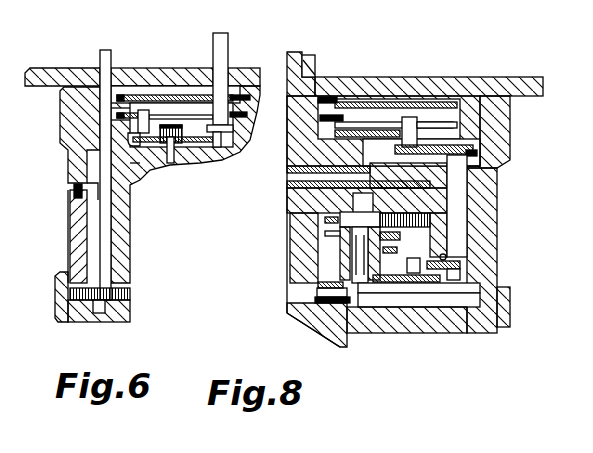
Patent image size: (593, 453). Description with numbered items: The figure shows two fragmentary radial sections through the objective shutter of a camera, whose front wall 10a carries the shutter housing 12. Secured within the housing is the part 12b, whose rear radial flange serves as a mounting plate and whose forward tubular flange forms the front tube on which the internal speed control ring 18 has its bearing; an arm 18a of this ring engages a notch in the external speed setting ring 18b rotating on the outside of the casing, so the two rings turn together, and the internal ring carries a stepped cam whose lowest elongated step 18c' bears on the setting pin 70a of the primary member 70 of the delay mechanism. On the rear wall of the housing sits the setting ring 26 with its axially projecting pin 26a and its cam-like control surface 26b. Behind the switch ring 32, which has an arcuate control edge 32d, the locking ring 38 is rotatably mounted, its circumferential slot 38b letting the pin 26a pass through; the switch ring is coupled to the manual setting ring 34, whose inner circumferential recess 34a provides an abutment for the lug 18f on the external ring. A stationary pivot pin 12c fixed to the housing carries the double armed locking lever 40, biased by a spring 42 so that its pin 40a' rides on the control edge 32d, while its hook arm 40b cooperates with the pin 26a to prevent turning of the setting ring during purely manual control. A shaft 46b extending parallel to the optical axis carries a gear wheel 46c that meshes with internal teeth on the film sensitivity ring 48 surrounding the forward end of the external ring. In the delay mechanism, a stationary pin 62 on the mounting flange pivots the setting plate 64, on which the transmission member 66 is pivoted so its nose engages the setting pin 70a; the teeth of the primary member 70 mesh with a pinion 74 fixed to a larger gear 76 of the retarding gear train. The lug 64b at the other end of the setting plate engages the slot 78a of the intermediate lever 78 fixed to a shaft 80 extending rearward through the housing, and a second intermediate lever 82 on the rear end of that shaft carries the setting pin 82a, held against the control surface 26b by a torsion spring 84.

In FIG. 6, the front wall 10a is at (50, 70).
In FIG. 8, the front wall 10a is at (505, 79).
In FIG. 6, the shutter housing 12 is at (125, 233).
In FIG. 8, the shutter housing 12 is at (297, 93).
In FIG. 8, the front tube part 12b is at (292, 331).
In FIG. 6, the stationary pivot pin 12c is at (170, 137).
In FIG. 8, the internal speed control ring 18 is at (320, 288).
In FIG. 8, the arm 18a is at (480, 307).
In FIG. 6, the external speed setting ring 18b is at (72, 243).
In FIG. 8, the external speed setting ring 18b is at (488, 277).
In FIG. 8, the first cam step 18c' is at (317, 338).
In FIG. 6, the lug 18f is at (76, 197).
In FIG. 6, the setting ring 26 is at (233, 141).
In FIG. 8, the setting ring 26 is at (352, 130).
In FIG. 6, the axially projecting pin 26a is at (223, 58).
In FIG. 8, the cam-like control surface 26b is at (383, 130).
In FIG. 6, the switch ring 32 is at (117, 117).
In FIG. 8, the switch ring 32 is at (455, 124).
In FIG. 6, the arcuate control edge 32d is at (136, 108).
In FIG. 6, the manual setting ring 34 is at (67, 100).
In FIG. 8, the manual setting ring 34 is at (505, 120).
In FIG. 6, the circumferential recess 34a is at (74, 188).
In FIG. 6, the locking ring 38 is at (117, 97).
In FIG. 8, the locking ring 38 is at (437, 104).
In FIG. 6, the circumferential slot 38b is at (234, 75).
In FIG. 6, the locking lever 40 is at (163, 146).
In FIG. 6, the pin 40a' is at (156, 81).
In FIG. 6, the hook arm 40b is at (200, 143).
In FIG. 6, the spring 42 is at (133, 170).
In FIG. 6, the shaft 46b is at (106, 50).
In FIG. 6, the gear wheel 46c is at (83, 303).
In FIG. 6, the film sensitivity ring 48 is at (55, 300).
In FIG. 8, the film sensitivity ring 48 is at (497, 312).
In FIG. 8, the stationary pin 62 is at (357, 203).
In FIG. 8, the delay mechanism setting plate 64 is at (390, 282).
In FIG. 8, the lug 64b is at (410, 252).
In FIG. 8, the transmission member 66 is at (330, 248).
In FIG. 8, the primary member 70 is at (323, 237).
In FIG. 8, the setting pin 70a is at (360, 290).
In FIG. 8, the pinion 74 is at (433, 222).
In FIG. 8, the larger gear 76 is at (317, 220).
In FIG. 8, the intermediate lever 78 is at (465, 272).
In FIG. 8, the slot 78a is at (427, 263).
In FIG. 8, the shaft 80 is at (457, 182).
In FIG. 8, the second intermediate lever 82 is at (477, 152).
In FIG. 8, the setting pin 82a is at (410, 117).
In FIG. 8, the torsion spring 84 is at (443, 260).